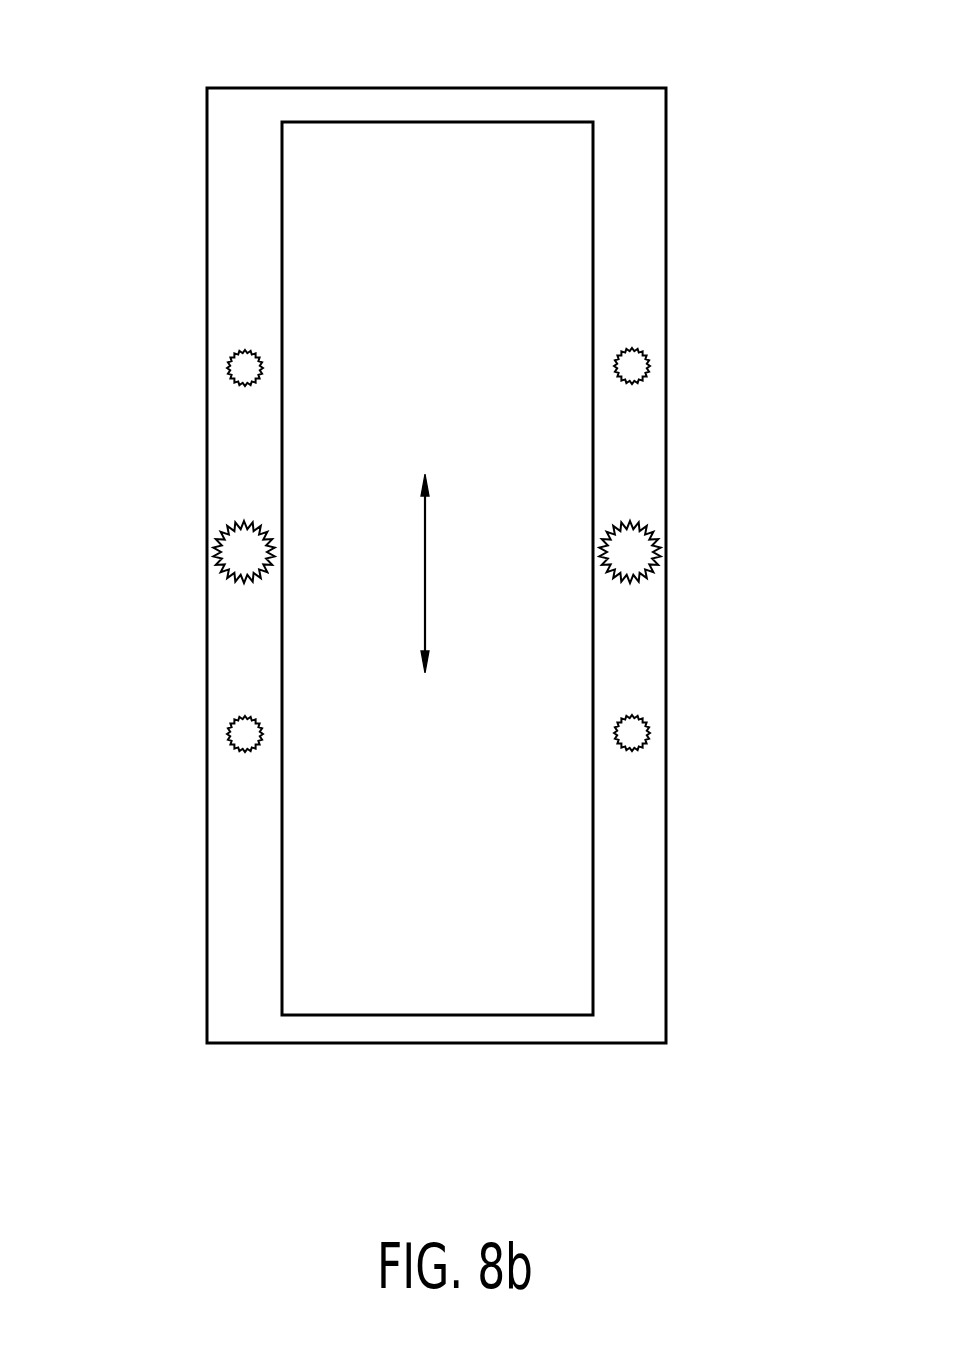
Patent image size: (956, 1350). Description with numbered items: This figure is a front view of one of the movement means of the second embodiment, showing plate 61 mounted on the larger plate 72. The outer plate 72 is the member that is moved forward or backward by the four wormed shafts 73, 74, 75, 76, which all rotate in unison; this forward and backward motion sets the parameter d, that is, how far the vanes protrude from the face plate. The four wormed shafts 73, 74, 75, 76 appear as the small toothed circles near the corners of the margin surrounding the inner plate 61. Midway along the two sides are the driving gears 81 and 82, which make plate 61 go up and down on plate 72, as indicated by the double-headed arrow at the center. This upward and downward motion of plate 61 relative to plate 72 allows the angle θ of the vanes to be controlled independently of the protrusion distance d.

The plate 61 is at (392, 178).
The plate 72 is at (637, 179).
The wormed shaft 73 is at (229, 742).
The wormed shaft 74 is at (647, 742).
The wormed shaft 75 is at (230, 378).
The wormed shaft 76 is at (647, 374).
The driving gear 81 is at (222, 570).
The driving gear 82 is at (652, 571).